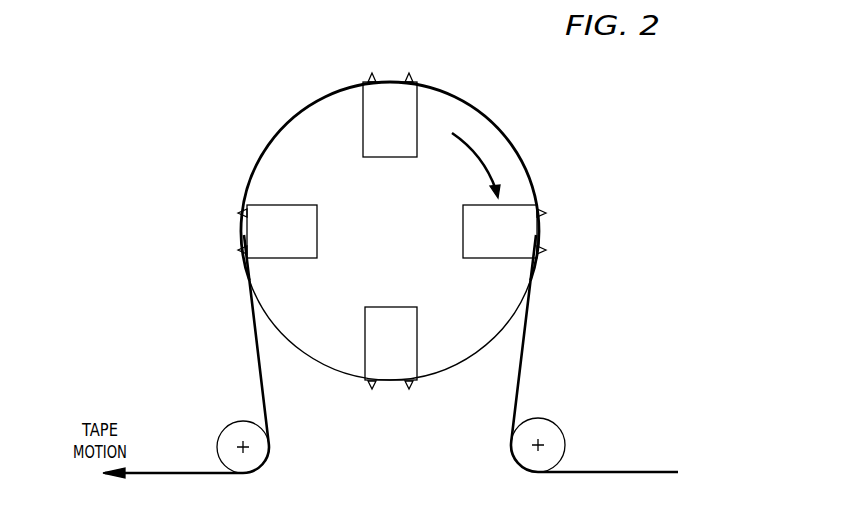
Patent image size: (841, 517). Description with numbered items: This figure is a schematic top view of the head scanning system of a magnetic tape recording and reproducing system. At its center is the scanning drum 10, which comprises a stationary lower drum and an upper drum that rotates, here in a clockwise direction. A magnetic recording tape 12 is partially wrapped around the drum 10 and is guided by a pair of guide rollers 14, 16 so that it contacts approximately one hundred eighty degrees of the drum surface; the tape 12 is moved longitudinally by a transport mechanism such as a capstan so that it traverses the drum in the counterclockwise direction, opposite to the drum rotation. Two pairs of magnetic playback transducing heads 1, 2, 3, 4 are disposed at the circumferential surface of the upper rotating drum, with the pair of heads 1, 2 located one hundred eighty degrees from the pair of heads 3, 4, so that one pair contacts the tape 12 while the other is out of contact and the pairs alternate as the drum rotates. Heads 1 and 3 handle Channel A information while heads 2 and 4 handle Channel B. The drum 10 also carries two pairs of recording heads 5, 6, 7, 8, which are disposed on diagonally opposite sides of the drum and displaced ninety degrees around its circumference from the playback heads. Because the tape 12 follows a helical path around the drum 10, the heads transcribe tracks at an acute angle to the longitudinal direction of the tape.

The magnetic playback transducing head 1 is at (552, 251).
The magnetic playback transducing head 2 is at (515, 231).
The magnetic playback transducing head 3 is at (267, 231).
The magnetic playback transducing head 4 is at (232, 251).
The recording head 5 is at (391, 362).
The recording head 6 is at (409, 399).
The recording head 7 is at (409, 66).
The recording head 8 is at (390, 103).
The scanning drum 10 is at (441, 93).
The magnetic recording tape 12 is at (525, 339).
The guide roller 14 is at (546, 420).
The guide roller 16 is at (240, 423).